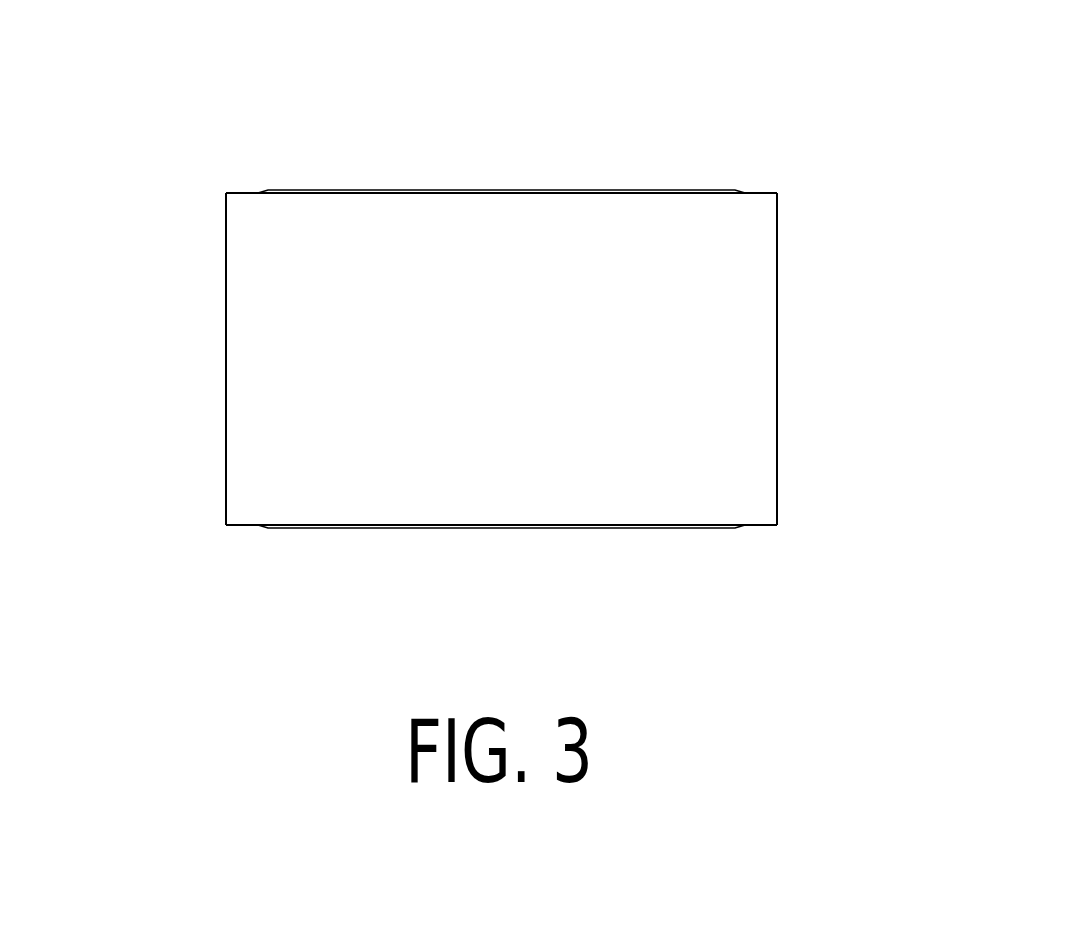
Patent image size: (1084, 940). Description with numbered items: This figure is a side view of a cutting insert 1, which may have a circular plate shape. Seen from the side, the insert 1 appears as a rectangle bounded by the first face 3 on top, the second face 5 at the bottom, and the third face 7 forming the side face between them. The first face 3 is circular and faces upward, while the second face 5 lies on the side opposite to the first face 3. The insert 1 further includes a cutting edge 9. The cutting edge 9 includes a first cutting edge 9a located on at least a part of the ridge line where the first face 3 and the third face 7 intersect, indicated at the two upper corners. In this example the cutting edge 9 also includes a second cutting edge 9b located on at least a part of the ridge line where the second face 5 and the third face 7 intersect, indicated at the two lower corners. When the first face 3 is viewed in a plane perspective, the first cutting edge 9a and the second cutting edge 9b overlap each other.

The insert 1 is at (352, 130).
The first face 3 is at (560, 188).
The second face 5 is at (596, 531).
The third face 7 is at (733, 364).
The cutting edge 9 is at (500, 358).
The first cutting edge 9a is at (226, 193).
The second cutting edge 9b is at (226, 525).